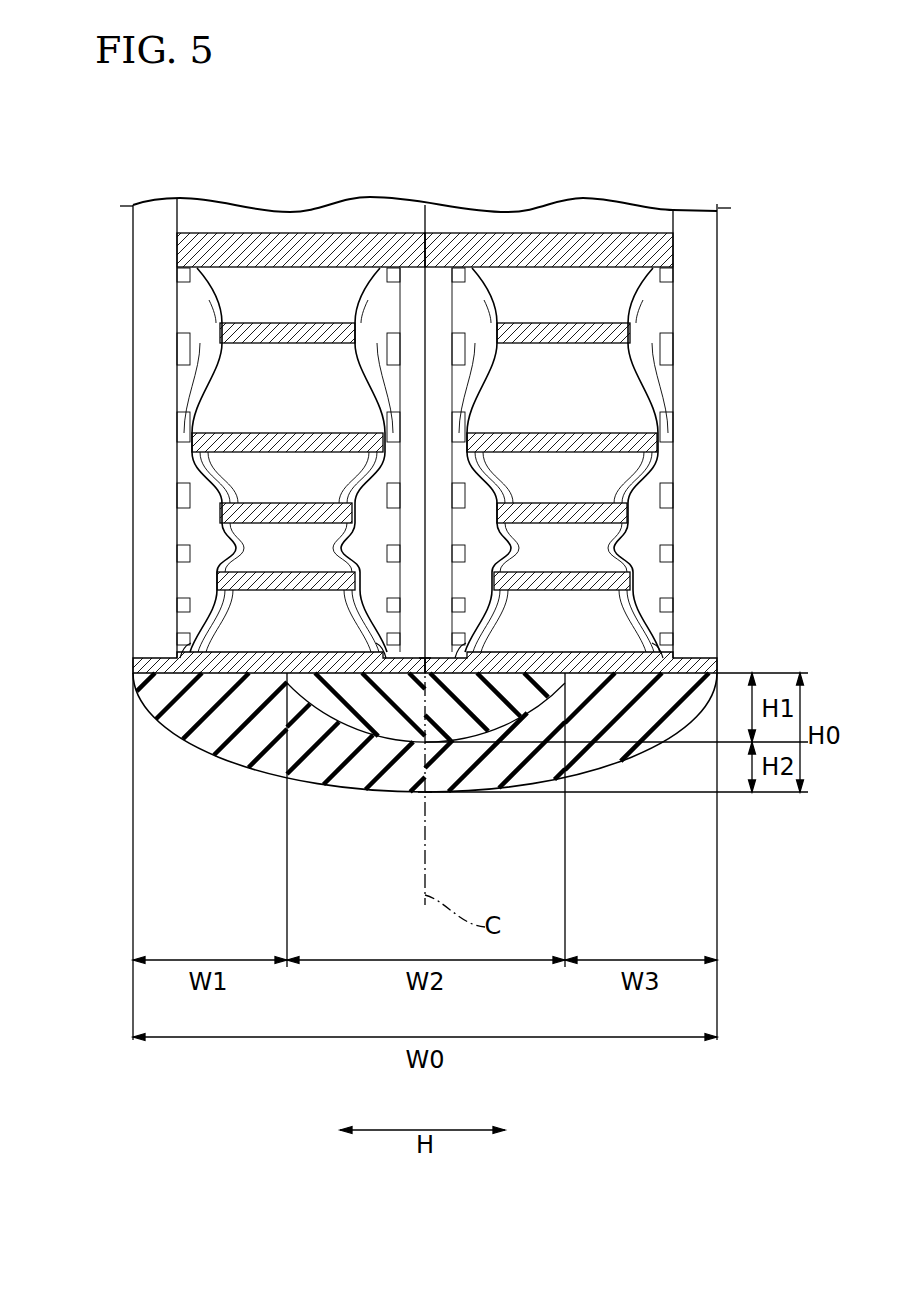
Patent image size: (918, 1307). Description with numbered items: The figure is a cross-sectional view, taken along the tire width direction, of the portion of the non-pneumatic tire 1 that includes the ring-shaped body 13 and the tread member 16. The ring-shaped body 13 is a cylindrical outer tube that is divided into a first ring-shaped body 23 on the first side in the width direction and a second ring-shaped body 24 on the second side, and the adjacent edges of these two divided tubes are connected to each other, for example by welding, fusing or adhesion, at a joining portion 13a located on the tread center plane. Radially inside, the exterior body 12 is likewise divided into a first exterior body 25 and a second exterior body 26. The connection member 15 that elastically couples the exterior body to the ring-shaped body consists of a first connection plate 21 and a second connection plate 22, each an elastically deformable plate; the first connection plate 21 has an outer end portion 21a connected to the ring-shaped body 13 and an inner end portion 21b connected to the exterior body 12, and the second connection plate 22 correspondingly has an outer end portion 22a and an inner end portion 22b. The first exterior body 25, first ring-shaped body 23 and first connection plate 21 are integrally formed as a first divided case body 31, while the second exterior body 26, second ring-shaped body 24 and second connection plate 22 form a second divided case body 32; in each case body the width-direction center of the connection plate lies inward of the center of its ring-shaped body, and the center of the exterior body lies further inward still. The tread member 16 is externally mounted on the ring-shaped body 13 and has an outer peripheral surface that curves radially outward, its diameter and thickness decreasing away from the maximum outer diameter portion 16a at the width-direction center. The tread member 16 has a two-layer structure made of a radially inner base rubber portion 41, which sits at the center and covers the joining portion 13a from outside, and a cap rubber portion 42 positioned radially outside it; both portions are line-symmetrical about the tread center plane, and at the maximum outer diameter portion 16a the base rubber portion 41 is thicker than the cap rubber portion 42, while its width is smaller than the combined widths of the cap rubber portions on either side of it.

The non-pneumatic tire 1 is at (727, 97).
The exterior body 12 is at (425, 169).
The first exterior body 25 is at (549, 191).
The second exterior body 26 is at (368, 220).
The ring-shaped body 13 is at (390, 731).
The joining portion 13a is at (415, 648).
The first ring-shaped body 23 is at (468, 682).
The second ring-shaped body 24 is at (355, 680).
The connection member 15 is at (422, 398).
The first connection plate 21 is at (646, 398).
The outer end portion of first connection plate 21a is at (650, 639).
The inner end portion of first connection plate 21b is at (598, 283).
The second connection plate 22 is at (202, 398).
The outer end portion of second connection plate 22a is at (203, 644).
The inner end portion of second connection plate 22b is at (253, 283).
The tread member 16 is at (426, 820).
The maximum outer diameter portion 16a is at (424, 795).
The base rubber portion 41 is at (470, 722).
The cap rubber portion 42 is at (509, 758).
The first divided case body 31 is at (728, 377).
The second divided case body 32 is at (124, 377).